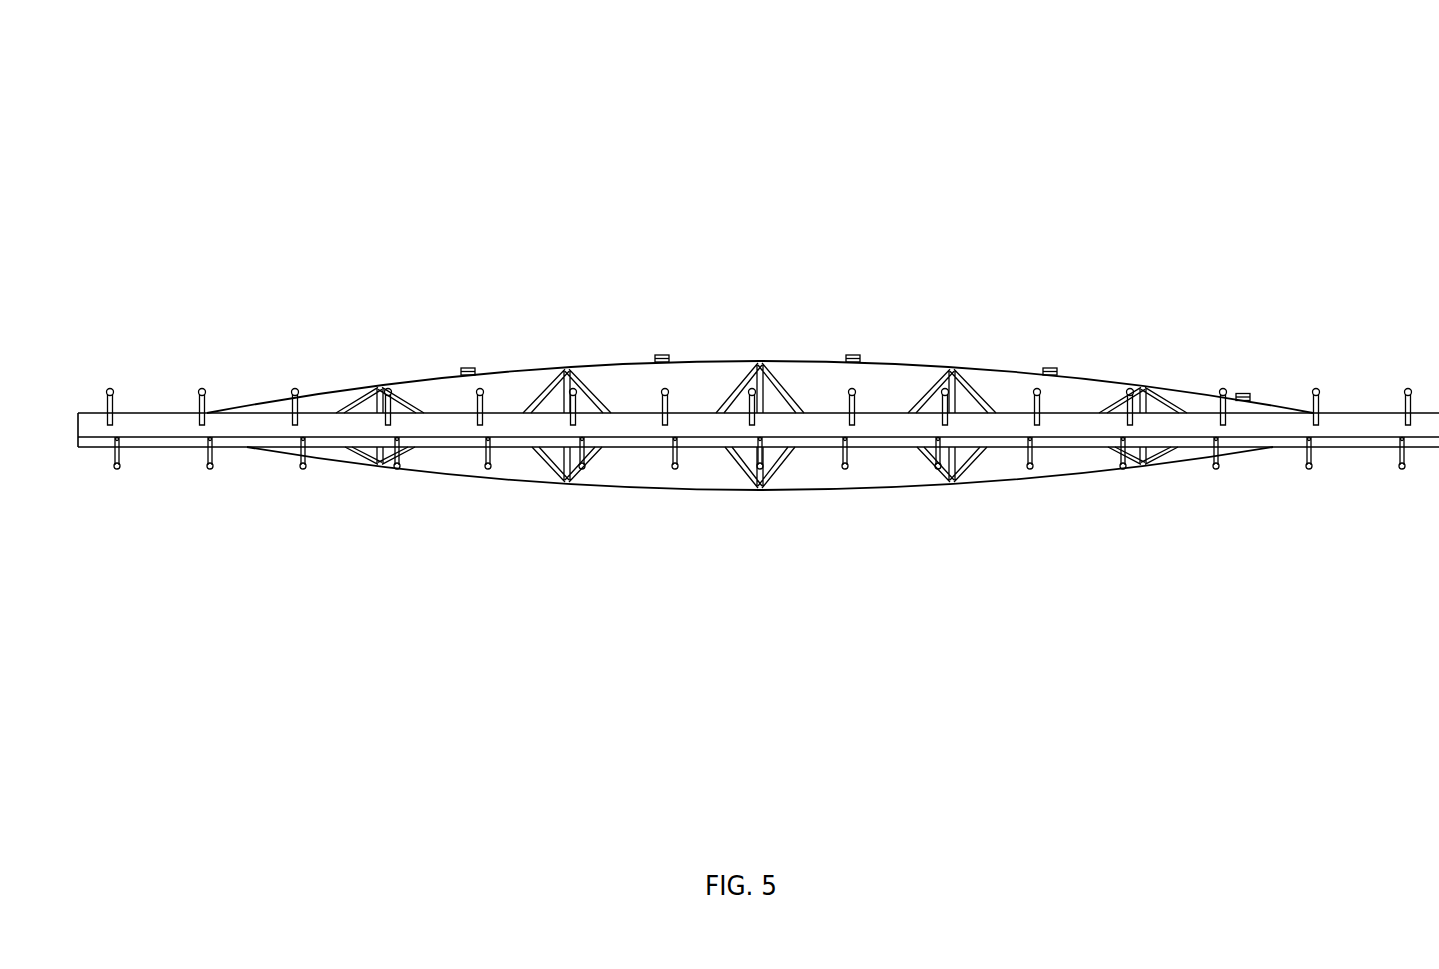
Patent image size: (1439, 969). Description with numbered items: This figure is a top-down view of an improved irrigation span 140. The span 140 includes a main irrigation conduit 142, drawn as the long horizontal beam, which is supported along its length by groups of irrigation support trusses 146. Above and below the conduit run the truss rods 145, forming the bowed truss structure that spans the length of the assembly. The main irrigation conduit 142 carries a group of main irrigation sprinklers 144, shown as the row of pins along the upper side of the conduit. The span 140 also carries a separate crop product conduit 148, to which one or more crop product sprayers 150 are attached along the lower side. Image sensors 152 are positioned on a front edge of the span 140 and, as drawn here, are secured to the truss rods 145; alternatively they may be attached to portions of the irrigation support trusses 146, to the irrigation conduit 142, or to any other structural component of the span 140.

The span 140 is at (915, 52).
The main irrigation conduit 142 is at (520, 420).
The main irrigation sprinklers 144 is at (477, 403).
The truss rods 145 is at (1090, 377).
The irrigation support trusses 146 is at (735, 470).
The crop product conduit 148 is at (1078, 440).
The crop product sprayers 150 is at (488, 466).
The image sensors 152 is at (1050, 368).